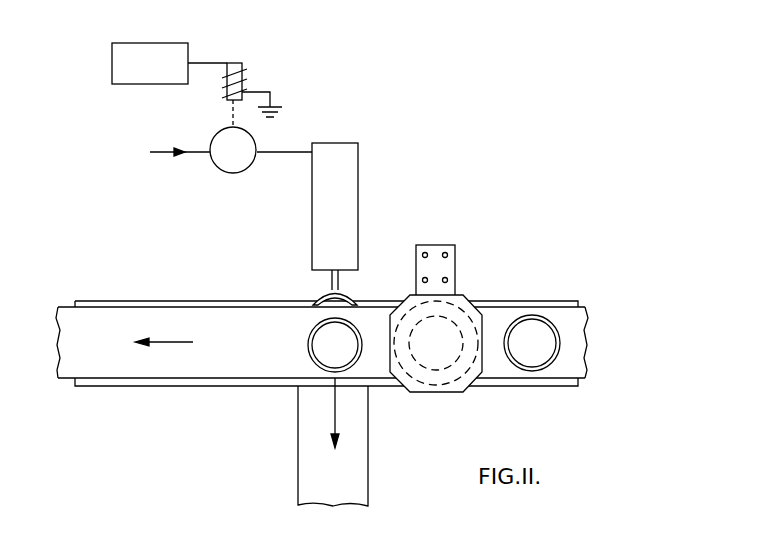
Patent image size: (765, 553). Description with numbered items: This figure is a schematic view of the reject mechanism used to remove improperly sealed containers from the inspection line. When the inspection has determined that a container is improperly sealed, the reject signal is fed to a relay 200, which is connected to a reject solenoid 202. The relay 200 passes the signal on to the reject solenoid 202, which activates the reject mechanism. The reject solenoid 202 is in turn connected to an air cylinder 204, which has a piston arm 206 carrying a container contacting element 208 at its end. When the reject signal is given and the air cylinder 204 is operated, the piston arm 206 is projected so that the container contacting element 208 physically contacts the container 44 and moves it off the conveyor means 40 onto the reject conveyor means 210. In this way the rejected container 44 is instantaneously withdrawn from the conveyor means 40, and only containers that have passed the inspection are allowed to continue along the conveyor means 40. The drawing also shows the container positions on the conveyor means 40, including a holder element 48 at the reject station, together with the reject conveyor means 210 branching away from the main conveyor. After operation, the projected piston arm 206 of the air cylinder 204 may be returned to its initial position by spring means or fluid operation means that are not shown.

The relay 200 is at (147, 43).
The reject solenoid 202 is at (217, 165).
The air cylinder 204 is at (358, 191).
The piston arm 206 is at (332, 285).
The container contacting element 208 is at (355, 295).
The conveyor means 40 is at (500, 368).
The container 44 is at (308, 345).
The container holder 48 is at (444, 380).
The reject conveyor means 210 is at (298, 440).